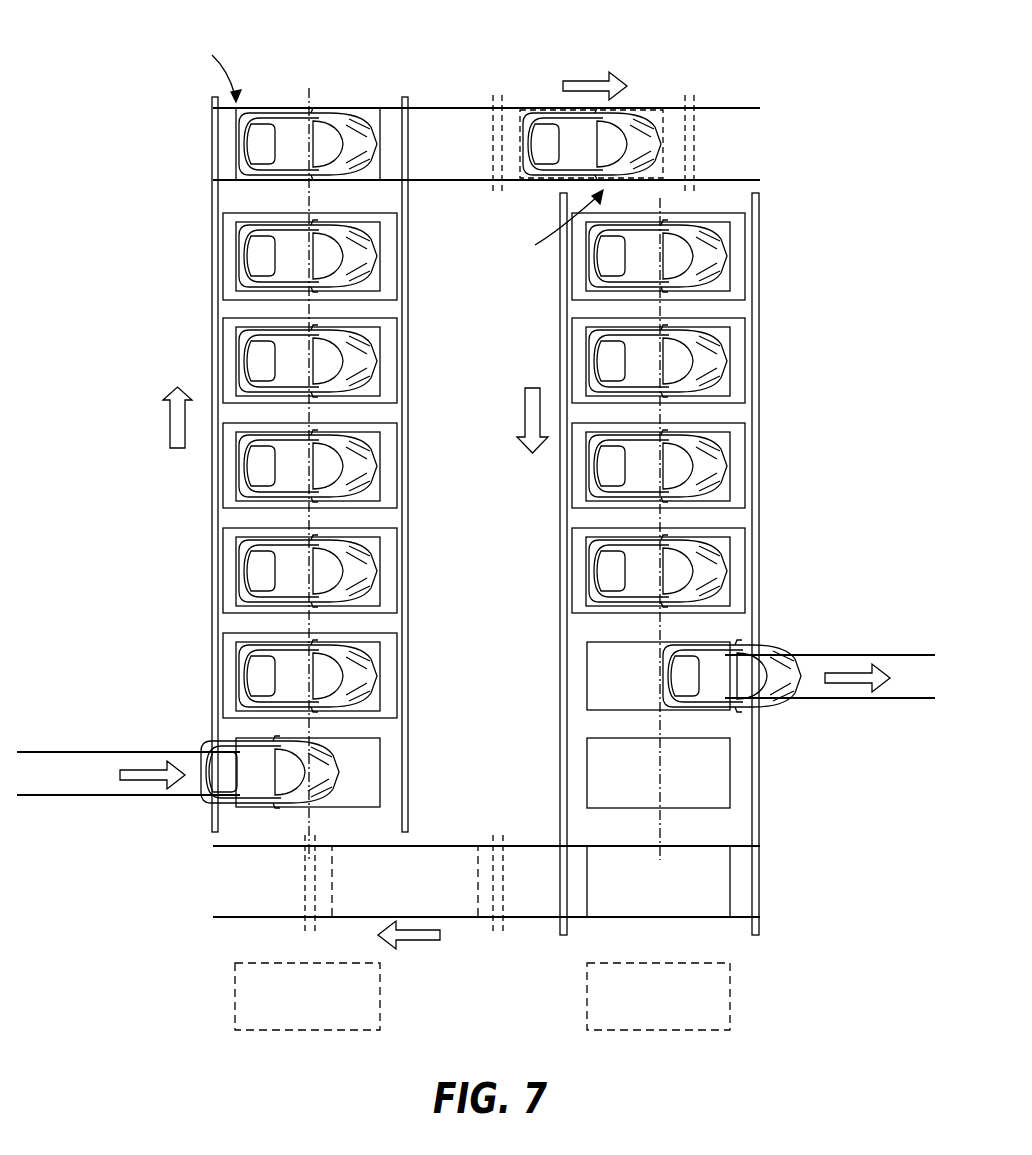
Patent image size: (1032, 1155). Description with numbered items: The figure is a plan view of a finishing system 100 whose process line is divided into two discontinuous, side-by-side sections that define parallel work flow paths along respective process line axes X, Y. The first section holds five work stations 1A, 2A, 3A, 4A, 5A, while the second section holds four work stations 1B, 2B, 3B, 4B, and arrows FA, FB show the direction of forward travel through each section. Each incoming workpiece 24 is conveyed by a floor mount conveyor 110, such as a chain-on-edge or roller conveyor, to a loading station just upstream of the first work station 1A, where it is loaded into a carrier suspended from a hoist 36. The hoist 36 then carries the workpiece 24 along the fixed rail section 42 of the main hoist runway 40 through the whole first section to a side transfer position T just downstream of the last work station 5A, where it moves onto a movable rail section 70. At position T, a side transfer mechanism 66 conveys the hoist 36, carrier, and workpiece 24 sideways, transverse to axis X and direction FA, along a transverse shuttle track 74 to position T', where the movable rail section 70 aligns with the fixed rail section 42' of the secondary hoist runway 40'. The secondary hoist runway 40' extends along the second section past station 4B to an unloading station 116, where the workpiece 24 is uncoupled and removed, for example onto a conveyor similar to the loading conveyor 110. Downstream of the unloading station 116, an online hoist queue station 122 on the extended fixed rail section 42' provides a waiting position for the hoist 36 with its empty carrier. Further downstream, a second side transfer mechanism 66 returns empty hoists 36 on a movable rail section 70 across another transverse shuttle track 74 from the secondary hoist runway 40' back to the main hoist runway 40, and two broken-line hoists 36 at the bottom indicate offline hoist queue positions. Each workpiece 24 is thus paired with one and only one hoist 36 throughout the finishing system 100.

The finishing system 100 is at (122, 72).
The main hoist runway 40 is at (236, 413).
The secondary hoist runway 40' is at (728, 332).
The movable rail section 70 is at (212, 135).
The fixed rail section 42 is at (267, 413).
The fixed rail section 42' is at (710, 357).
The transverse shuttle track 74 is at (460, 108).
The side transfer mechanism 66 is at (536, 100).
The hoist 36 is at (372, 765).
The workpiece 24 is at (258, 800).
The online hoist queue station 122 is at (739, 753).
The floor mount conveyor 110 is at (90, 798).
The unloading station 116 is at (579, 650).
The first work station of first section 1A is at (232, 662).
The work station 2A is at (232, 568).
The work station 3A is at (232, 470).
The work station 4A is at (232, 360).
The last work station of first section 5A is at (232, 258).
The first work station of second section 1B is at (760, 272).
The work station 2B is at (760, 378).
The work station 3B is at (760, 482).
The last work station of second section 4B is at (760, 588).
The side transfer position T is at (219, 65).
The side transfer position T' is at (557, 229).
The process line axis X is at (305, 100).
The process line axis Y is at (760, 407).
The direction of forward travel FA is at (170, 417).
The direction of forward travel FB is at (524, 420).